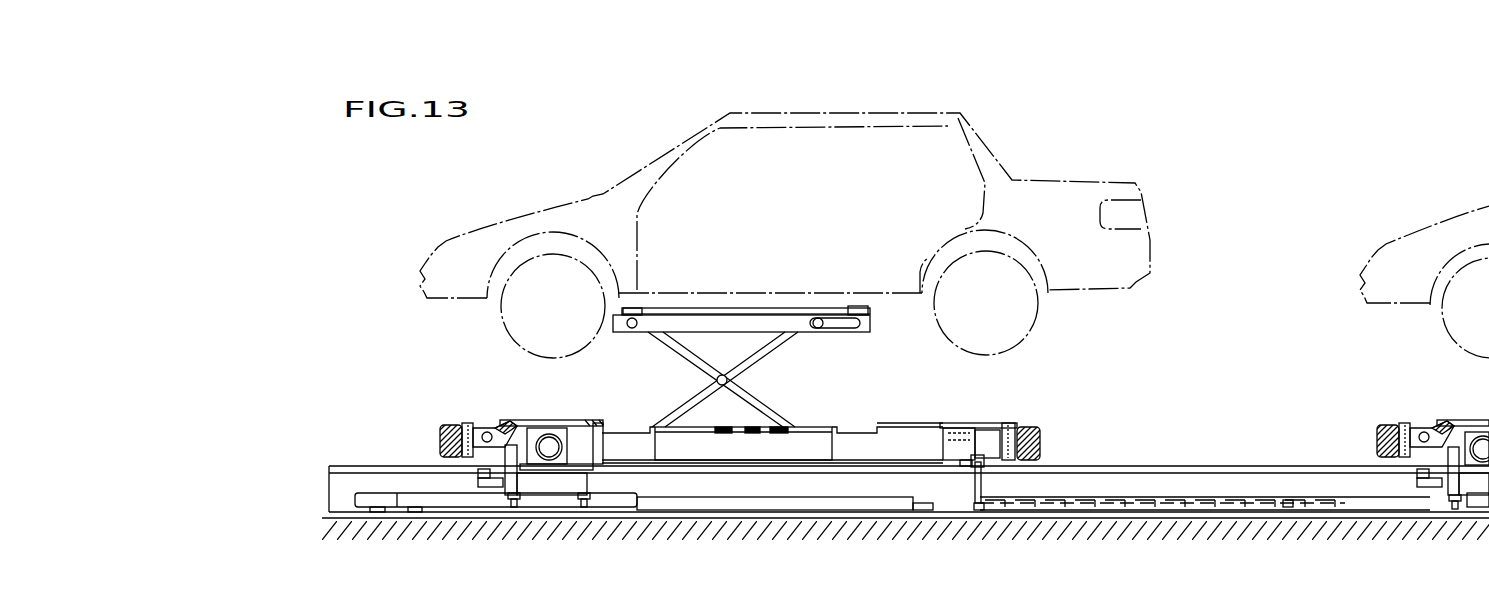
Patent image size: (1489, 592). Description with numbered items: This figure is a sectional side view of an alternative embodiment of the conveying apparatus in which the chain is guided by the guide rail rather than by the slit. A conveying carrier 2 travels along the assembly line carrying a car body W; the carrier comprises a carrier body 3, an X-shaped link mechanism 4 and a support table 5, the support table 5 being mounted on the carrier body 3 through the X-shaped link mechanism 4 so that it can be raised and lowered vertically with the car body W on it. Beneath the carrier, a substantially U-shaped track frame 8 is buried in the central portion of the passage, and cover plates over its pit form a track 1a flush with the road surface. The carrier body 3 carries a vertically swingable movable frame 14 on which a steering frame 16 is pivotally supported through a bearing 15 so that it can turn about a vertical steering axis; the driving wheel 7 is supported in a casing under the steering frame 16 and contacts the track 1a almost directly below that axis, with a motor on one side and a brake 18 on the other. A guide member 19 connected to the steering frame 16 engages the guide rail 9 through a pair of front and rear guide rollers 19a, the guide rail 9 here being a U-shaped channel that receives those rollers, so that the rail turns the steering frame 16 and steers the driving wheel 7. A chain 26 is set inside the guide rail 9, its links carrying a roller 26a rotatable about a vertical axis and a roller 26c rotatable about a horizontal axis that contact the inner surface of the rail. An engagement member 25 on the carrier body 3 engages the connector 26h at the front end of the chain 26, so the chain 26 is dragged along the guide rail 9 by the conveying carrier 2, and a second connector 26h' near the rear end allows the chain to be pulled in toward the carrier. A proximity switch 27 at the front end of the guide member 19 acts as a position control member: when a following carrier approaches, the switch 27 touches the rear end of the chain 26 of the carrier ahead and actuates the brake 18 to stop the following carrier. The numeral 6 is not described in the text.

The track 1a is at (413, 465).
The conveying carrier 2 is at (893, 424).
The carrier body 3 is at (848, 458).
The X-shaped link mechanism 4 is at (767, 358).
The support table 5 is at (718, 325).
The drive unit 6 is at (484, 470).
The driving wheel 7 is at (550, 432).
The track frame 8 is at (905, 548).
The guide rail 9 is at (718, 507).
The movable frame 14 is at (505, 422).
The bearing 15 is at (511, 422).
The steering frame 16 is at (542, 428).
The brake 18 is at (551, 466).
The guide member 19 is at (540, 485).
The guide rollers 19a is at (515, 500).
The engagement member 25 is at (972, 485).
The chain 26 is at (1137, 497).
The roller 26a is at (1052, 497).
The roller 26c is at (1083, 497).
The connector 26h is at (1001, 540).
The second connector 26h' is at (1288, 539).
The proximity switch 27 is at (482, 488).
The car body W is at (517, 217).